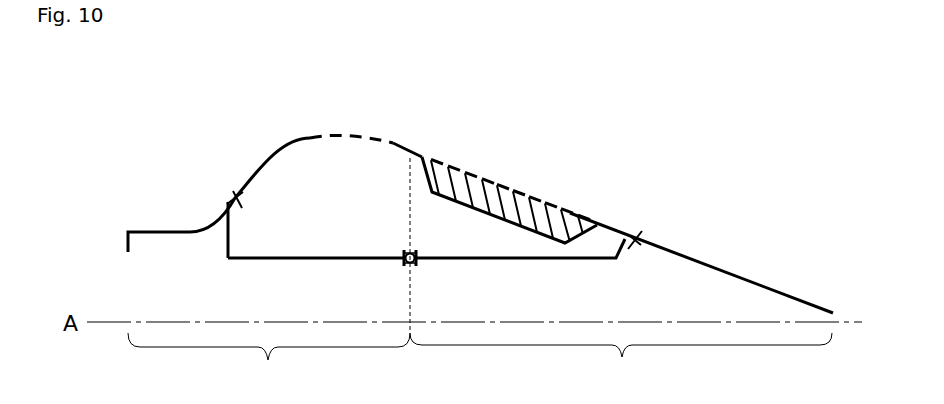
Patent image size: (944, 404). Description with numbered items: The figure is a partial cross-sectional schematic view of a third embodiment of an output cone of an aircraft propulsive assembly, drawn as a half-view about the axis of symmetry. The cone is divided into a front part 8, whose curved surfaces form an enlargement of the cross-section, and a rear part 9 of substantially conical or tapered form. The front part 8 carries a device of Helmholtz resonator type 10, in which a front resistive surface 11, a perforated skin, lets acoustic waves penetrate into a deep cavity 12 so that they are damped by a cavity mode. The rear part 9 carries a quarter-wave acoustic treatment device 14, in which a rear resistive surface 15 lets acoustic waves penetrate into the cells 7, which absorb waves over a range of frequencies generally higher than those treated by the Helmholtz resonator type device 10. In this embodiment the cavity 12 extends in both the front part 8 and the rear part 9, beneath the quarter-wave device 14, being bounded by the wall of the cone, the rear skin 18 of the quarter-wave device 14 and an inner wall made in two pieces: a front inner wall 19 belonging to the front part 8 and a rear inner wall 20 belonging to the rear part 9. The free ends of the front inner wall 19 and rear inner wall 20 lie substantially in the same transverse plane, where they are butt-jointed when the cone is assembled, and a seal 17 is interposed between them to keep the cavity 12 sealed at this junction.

The cells 7 is at (505, 202).
The front part 8 is at (269, 362).
The rear part 9 is at (621, 362).
The device of Helmholtz resonator type 10 is at (288, 273).
The front resistive surface 11 is at (322, 137).
The cavity 12 is at (283, 177).
The quarter-wave acoustic treatment device 14 is at (483, 226).
The rear resistive surface 15 is at (552, 202).
The seal 17 is at (405, 251).
The rear skin 18 is at (541, 205).
The front inner wall 19 is at (383, 259).
The rear inner wall 20 is at (596, 262).